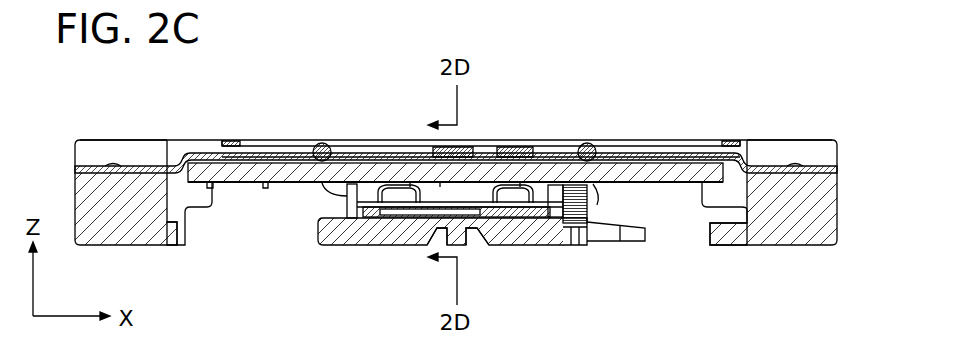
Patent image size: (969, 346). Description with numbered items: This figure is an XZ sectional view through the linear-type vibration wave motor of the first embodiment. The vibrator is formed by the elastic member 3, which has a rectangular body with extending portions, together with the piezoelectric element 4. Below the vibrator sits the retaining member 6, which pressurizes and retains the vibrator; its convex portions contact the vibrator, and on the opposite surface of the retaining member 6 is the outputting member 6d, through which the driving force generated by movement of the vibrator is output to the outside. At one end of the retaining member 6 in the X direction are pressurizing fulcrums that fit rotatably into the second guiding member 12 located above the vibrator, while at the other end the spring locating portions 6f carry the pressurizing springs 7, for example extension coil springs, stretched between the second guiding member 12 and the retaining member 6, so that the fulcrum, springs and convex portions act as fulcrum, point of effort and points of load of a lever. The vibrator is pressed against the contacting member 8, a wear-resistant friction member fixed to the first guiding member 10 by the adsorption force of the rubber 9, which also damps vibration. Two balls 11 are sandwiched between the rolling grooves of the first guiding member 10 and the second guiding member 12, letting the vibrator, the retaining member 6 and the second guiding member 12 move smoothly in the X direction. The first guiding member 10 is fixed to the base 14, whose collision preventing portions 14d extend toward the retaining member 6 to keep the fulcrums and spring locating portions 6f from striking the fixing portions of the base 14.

The elastic member 3 is at (440, 192).
The piezoelectric element 4 is at (366, 222).
The retaining member 6 is at (392, 246).
The outputting member 6d is at (478, 246).
The spring locating portion 6f is at (594, 246).
The pressurizing spring 7 is at (598, 204).
The contacting member 8 is at (270, 184).
The rubber 9 is at (701, 150).
The first guiding member 10 is at (739, 152).
The ball 11 is at (322, 142).
The second guiding member 12 is at (487, 139).
The base 14 is at (795, 247).
The collision preventing portion 14d is at (171, 247).